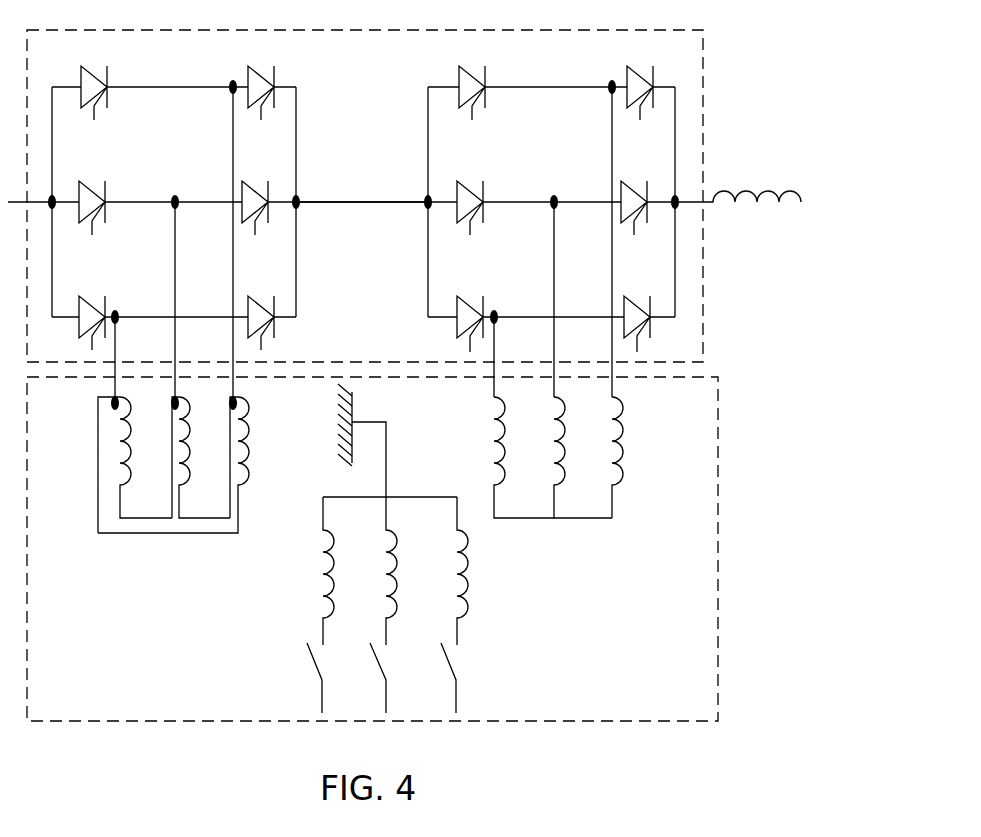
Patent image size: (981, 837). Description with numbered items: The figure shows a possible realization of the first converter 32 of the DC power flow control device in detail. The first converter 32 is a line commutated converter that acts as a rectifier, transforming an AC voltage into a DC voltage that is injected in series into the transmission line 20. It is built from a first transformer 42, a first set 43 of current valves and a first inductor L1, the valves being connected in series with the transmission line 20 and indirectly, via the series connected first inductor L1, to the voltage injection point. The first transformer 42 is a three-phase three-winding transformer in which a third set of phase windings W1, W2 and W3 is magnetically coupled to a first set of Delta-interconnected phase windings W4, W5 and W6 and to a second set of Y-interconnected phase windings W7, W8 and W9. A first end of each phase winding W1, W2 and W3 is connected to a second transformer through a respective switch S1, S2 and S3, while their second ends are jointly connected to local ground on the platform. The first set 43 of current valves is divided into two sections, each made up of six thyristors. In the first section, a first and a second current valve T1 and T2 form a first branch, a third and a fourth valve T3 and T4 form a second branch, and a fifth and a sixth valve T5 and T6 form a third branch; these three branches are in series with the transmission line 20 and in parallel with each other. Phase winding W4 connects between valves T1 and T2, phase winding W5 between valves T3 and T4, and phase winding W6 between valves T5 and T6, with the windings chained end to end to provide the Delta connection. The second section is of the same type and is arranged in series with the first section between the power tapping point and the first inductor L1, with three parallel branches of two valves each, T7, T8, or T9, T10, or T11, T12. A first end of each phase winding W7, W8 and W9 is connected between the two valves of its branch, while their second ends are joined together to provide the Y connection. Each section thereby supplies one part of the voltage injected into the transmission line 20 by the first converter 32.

The transmission line 20 is at (322, 200).
The first converter 32 is at (733, 328).
The first transformer 42 is at (718, 662).
The first set of current valves 43 is at (702, 133).
The first inductor L1 is at (752, 172).
The first current valve T1 is at (92, 300).
The second current valve T2 is at (258, 300).
The third current valve T3 is at (92, 185).
The fourth current valve T4 is at (262, 185).
The fifth current valve T5 is at (85, 74).
The sixth current valve T6 is at (258, 71).
The current valve T7 is at (459, 300).
The current valve T8 is at (643, 301).
The current valve T9 is at (465, 184).
The current valve T10 is at (646, 184).
The current valve T11 is at (466, 74).
The current valve T12 is at (643, 75).
The phase winding W1 is at (354, 571).
The phase winding W2 is at (415, 571).
The phase winding W3 is at (488, 571).
The phase winding W4 is at (137, 465).
The phase winding W5 is at (204, 457).
The phase winding W6 is at (199, 465).
The phase winding W7 is at (525, 457).
The phase winding W8 is at (583, 457).
The phase winding W9 is at (643, 457).
The switch S1 is at (340, 678).
The switch S2 is at (405, 678).
The switch S3 is at (472, 678).